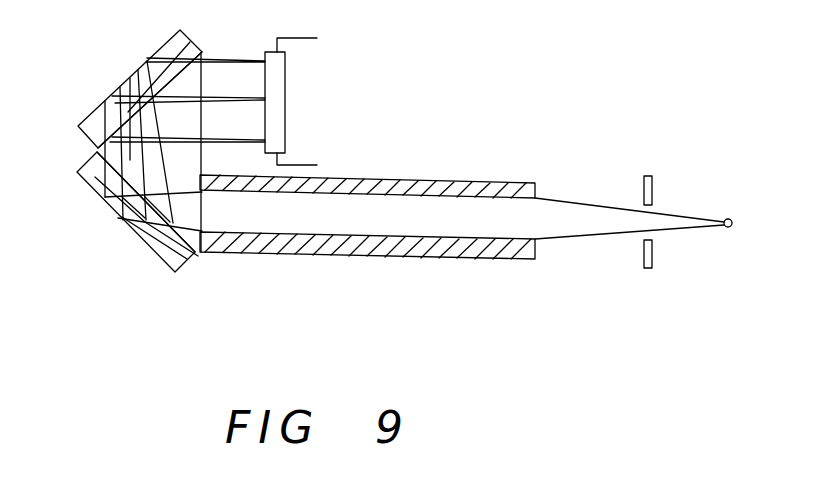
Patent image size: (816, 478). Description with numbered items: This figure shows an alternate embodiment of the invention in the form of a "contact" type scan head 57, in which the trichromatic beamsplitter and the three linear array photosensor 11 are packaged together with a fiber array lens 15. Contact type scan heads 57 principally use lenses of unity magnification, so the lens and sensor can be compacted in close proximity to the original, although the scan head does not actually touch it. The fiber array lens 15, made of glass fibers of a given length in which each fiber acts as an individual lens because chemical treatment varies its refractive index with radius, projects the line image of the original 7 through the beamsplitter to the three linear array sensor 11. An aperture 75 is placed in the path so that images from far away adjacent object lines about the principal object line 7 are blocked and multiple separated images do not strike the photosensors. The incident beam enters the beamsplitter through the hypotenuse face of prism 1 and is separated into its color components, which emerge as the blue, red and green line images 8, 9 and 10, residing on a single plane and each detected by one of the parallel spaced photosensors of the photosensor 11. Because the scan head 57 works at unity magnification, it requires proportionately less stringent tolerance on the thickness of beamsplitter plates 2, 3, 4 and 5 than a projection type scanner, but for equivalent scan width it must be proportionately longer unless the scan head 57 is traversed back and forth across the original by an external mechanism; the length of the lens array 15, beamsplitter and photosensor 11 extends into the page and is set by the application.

The prism 1 is at (194, 171).
The beamsplitter plate 2 is at (192, 257).
The beamsplitter plate 3 is at (178, 273).
The beamsplitter plate 4 is at (92, 150).
The beamsplitter plate 5 is at (80, 125).
The line image of original 7 is at (733, 219).
The blue line image 8 is at (250, 60).
The red line image 9 is at (250, 97).
The green line image 10 is at (253, 140).
The three linear array photosensor 11 is at (285, 128).
The fiber array lens 15 is at (488, 181).
The contact type scan head 57 is at (98, 213).
The aperture 75 is at (672, 194).